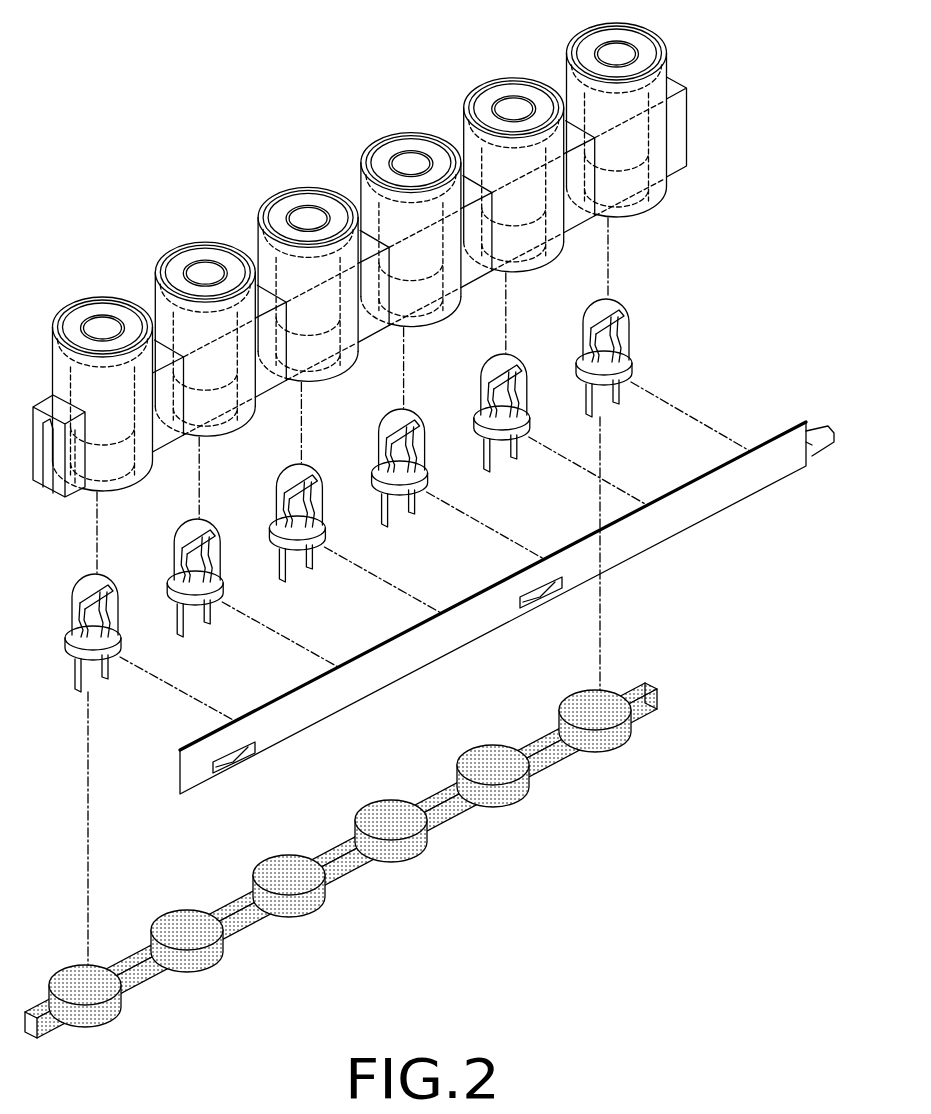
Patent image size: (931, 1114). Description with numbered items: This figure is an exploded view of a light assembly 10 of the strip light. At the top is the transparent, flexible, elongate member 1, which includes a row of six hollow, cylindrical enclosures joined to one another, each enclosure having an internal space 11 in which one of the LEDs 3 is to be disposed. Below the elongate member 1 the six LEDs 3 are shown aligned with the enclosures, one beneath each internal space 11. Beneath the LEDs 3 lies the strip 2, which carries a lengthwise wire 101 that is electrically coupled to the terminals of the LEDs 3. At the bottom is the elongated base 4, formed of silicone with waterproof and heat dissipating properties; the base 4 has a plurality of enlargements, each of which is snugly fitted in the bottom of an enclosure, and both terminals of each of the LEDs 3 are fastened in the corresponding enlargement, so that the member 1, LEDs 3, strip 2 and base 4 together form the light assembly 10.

The elongate member 1 is at (171, 264).
The internal space 11 is at (630, 185).
The LED 3 is at (78, 593).
The strip 2 is at (180, 773).
The lengthwise wire 101 is at (823, 424).
The elongated base 4 is at (508, 805).
The light assembly 10 is at (507, 903).